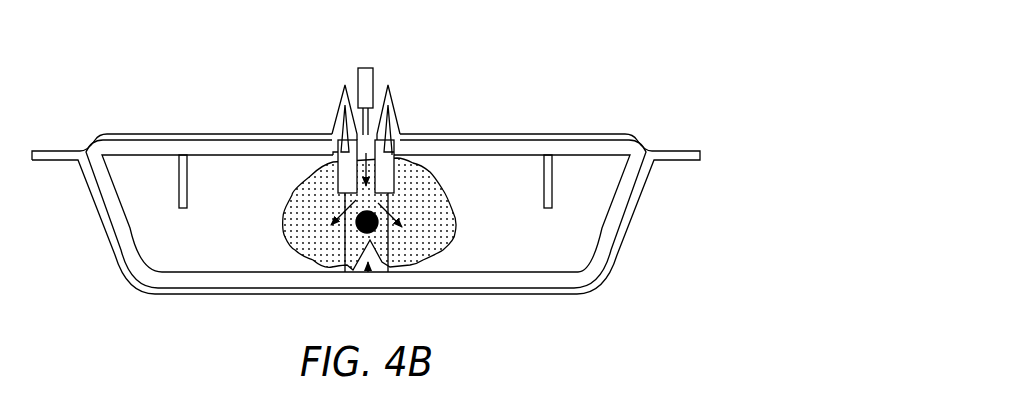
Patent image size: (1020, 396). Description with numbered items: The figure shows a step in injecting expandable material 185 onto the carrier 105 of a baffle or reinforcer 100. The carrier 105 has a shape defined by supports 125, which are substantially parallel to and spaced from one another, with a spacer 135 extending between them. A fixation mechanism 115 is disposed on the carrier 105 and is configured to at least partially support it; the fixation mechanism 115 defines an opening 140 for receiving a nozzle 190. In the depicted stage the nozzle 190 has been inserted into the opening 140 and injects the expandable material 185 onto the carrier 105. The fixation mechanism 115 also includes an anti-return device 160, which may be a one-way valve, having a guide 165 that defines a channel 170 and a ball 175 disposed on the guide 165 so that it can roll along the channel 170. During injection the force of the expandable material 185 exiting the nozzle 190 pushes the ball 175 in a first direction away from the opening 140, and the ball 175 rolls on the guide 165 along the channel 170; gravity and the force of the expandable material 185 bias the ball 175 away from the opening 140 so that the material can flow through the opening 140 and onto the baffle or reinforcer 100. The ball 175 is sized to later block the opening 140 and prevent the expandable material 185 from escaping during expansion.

The baffle or reinforcer 100 is at (544, 80).
The carrier 105 is at (618, 247).
The fixation mechanism 115 is at (405, 113).
The support 125 is at (592, 175).
The spacer 135 is at (178, 172).
The opening 140 is at (351, 81).
The anti-return device 160 is at (326, 243).
The guide 165 is at (384, 256).
The channel 170 is at (370, 282).
The ball 175 is at (455, 207).
The expandable material 185 is at (450, 240).
The nozzle 190 is at (375, 78).